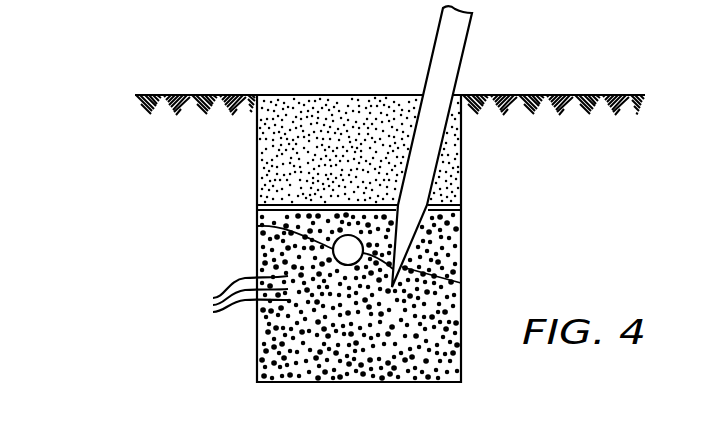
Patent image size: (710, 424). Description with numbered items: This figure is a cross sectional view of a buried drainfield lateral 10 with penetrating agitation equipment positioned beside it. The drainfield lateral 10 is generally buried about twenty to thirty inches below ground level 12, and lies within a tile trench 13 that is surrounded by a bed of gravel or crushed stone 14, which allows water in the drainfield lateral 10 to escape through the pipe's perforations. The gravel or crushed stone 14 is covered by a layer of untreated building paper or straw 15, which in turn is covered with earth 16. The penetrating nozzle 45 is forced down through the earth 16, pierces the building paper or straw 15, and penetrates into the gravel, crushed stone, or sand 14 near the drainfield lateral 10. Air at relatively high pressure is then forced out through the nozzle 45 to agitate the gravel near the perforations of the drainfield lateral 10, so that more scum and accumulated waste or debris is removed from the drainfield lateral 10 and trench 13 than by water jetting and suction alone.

The drainfield lateral 10 is at (258, 226).
The ground level 12 is at (199, 92).
The tile trench 13 is at (378, 383).
The bed of gravel or crushed stone 14 is at (232, 296).
The layer of untreated building paper or straw 15 is at (290, 203).
The earth 16 is at (360, 130).
The penetrating nozzle 45 is at (437, 164).